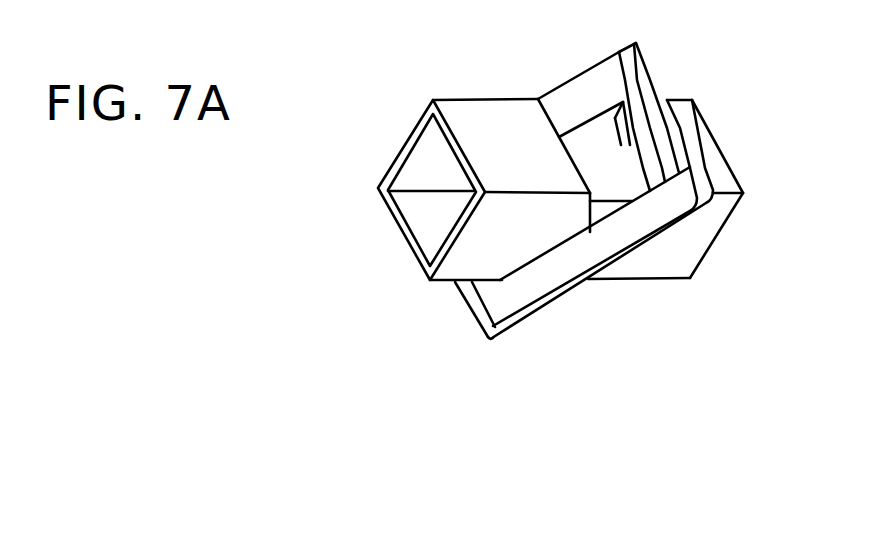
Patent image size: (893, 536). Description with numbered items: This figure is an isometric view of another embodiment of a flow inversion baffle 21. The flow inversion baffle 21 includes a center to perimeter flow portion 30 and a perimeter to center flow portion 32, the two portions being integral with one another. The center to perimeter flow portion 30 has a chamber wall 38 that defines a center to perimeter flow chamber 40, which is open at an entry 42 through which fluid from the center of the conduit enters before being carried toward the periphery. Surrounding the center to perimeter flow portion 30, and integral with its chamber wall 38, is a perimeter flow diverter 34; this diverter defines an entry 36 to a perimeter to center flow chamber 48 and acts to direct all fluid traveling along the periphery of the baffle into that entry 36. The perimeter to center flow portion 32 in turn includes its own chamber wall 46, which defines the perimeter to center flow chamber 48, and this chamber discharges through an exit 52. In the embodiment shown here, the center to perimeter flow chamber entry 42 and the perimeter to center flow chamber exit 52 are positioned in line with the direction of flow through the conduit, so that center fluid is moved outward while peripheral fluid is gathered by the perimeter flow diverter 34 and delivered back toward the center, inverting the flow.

The flow inversion baffle 21 is at (378, 238).
The center to perimeter flow portion 30 is at (380, 153).
The perimeter to center flow portion 32 is at (740, 112).
The perimeter flow diverter 34 is at (552, 297).
The entry 36 is at (602, 118).
The chamber wall 38 is at (472, 255).
The center to perimeter flow chamber 40 is at (432, 170).
The entry 42 is at (422, 145).
The chamber wall 46 is at (668, 262).
The perimeter to center flow chamber 48 is at (604, 173).
The exit 52 is at (705, 258).